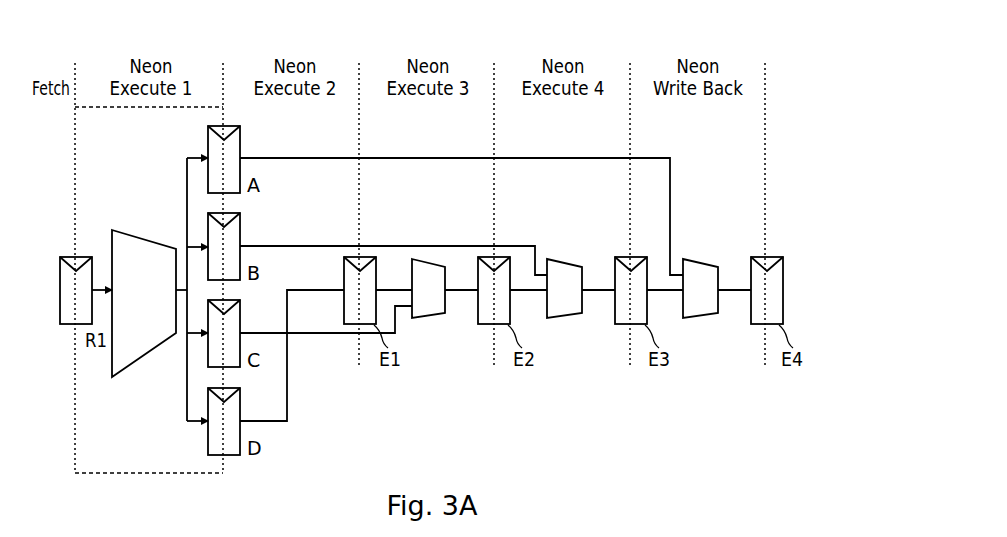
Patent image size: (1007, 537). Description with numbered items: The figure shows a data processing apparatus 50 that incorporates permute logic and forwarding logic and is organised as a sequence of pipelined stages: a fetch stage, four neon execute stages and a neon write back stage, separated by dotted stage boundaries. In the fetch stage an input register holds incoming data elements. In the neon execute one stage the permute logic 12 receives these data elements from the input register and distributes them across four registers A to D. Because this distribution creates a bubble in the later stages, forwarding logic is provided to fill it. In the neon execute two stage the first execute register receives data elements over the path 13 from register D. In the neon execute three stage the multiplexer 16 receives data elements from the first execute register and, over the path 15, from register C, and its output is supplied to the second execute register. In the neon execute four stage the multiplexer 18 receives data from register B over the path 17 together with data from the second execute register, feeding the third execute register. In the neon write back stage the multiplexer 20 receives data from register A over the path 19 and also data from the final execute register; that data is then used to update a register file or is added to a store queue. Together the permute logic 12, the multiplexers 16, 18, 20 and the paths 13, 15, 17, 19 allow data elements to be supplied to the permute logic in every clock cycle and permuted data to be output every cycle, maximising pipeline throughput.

The data processing apparatus 50 is at (634, 50).
The permute logic 12 is at (146, 239).
The path 13 is at (304, 290).
The path 15 is at (331, 334).
The multiplexer 16 is at (428, 318).
The path 17 is at (303, 246).
The multiplexer 18 is at (563, 318).
The path 19 is at (301, 158).
The multiplexer 20 is at (697, 318).